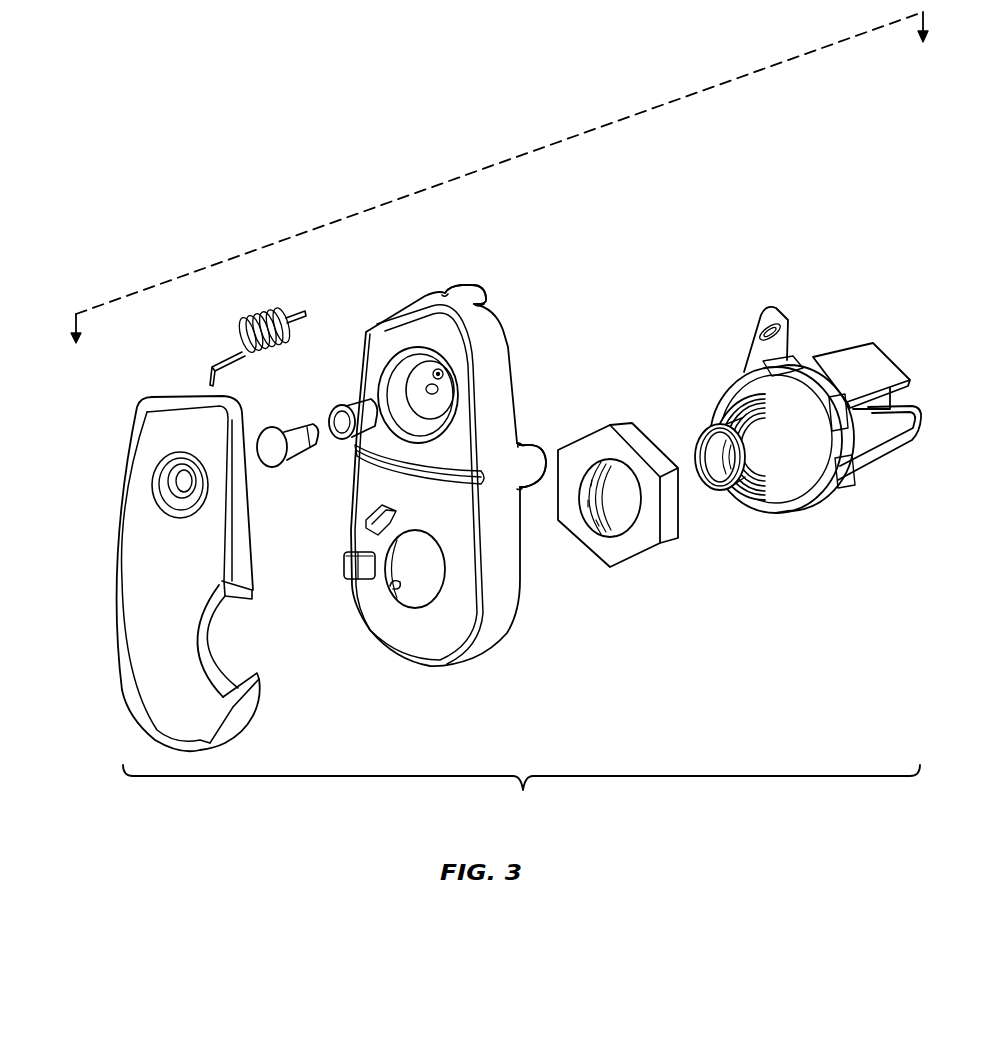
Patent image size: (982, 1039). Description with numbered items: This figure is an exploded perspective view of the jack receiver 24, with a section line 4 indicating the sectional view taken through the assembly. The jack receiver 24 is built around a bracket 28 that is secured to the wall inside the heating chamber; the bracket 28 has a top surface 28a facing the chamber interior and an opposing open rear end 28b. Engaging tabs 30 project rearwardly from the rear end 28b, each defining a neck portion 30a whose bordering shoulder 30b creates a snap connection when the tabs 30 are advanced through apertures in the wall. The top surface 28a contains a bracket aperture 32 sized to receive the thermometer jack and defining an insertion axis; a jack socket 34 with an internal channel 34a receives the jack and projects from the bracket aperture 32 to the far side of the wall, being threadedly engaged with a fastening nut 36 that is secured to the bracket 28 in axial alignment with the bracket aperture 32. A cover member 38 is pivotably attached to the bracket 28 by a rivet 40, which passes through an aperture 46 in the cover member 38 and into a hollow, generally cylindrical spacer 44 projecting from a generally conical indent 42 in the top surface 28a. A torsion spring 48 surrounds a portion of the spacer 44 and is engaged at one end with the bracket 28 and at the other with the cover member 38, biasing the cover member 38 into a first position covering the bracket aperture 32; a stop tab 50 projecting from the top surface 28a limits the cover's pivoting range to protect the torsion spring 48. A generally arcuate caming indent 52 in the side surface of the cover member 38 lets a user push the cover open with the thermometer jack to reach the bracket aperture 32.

The section line 4- 4 is at (498, 191).
The jack receiver 24 is at (521, 795).
The bracket 28 is at (446, 479).
The top surface 28a is at (438, 634).
The open rear end 28b is at (510, 629).
The engaging tab 30 is at (477, 289).
The neck portion 30a is at (446, 296).
The bordering shoulder 30b is at (485, 305).
The bracket aperture 32 is at (392, 586).
The jack socket 34 is at (790, 430).
The internal channel 34a is at (723, 472).
The fastening nut 36 is at (638, 559).
The cover member 38 is at (180, 573).
The rivet 40 is at (298, 431).
The conical indent 42 is at (397, 383).
The spacer 44 is at (358, 404).
The aperture 46 is at (168, 482).
The torsion spring 48 is at (259, 312).
The stop tab 50 is at (344, 563).
The caming indent 52 is at (236, 639).